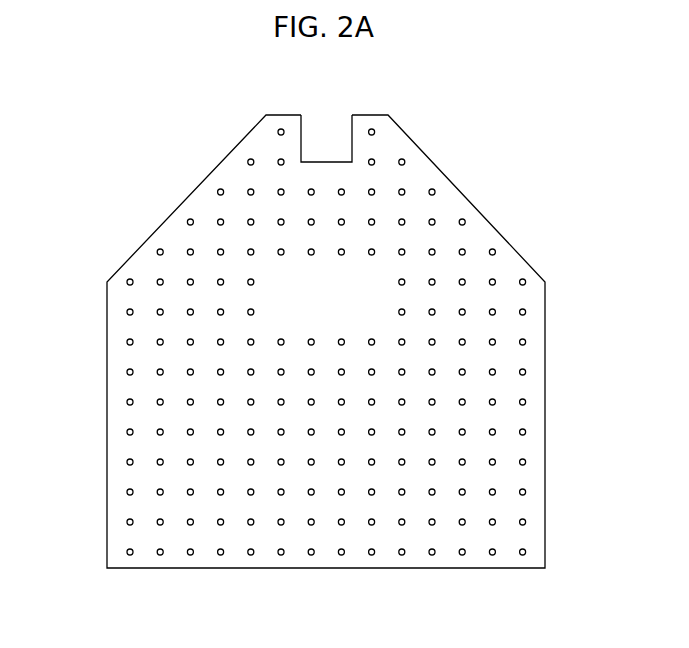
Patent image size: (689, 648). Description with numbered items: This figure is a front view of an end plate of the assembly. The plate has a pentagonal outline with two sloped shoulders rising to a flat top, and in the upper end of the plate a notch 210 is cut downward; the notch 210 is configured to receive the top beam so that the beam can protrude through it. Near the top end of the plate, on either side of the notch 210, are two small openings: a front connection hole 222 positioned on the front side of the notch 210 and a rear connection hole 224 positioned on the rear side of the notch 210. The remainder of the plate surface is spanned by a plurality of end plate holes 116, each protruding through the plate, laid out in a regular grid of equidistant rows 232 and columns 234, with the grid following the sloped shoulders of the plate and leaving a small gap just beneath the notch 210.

The end plate holes 116 is at (529, 281).
The notch 210 is at (302, 124).
The front connection hole 222 is at (278, 131).
The rear connection hole 224 is at (378, 131).
The rows 232 is at (122, 373).
The columns 234 is at (342, 567).